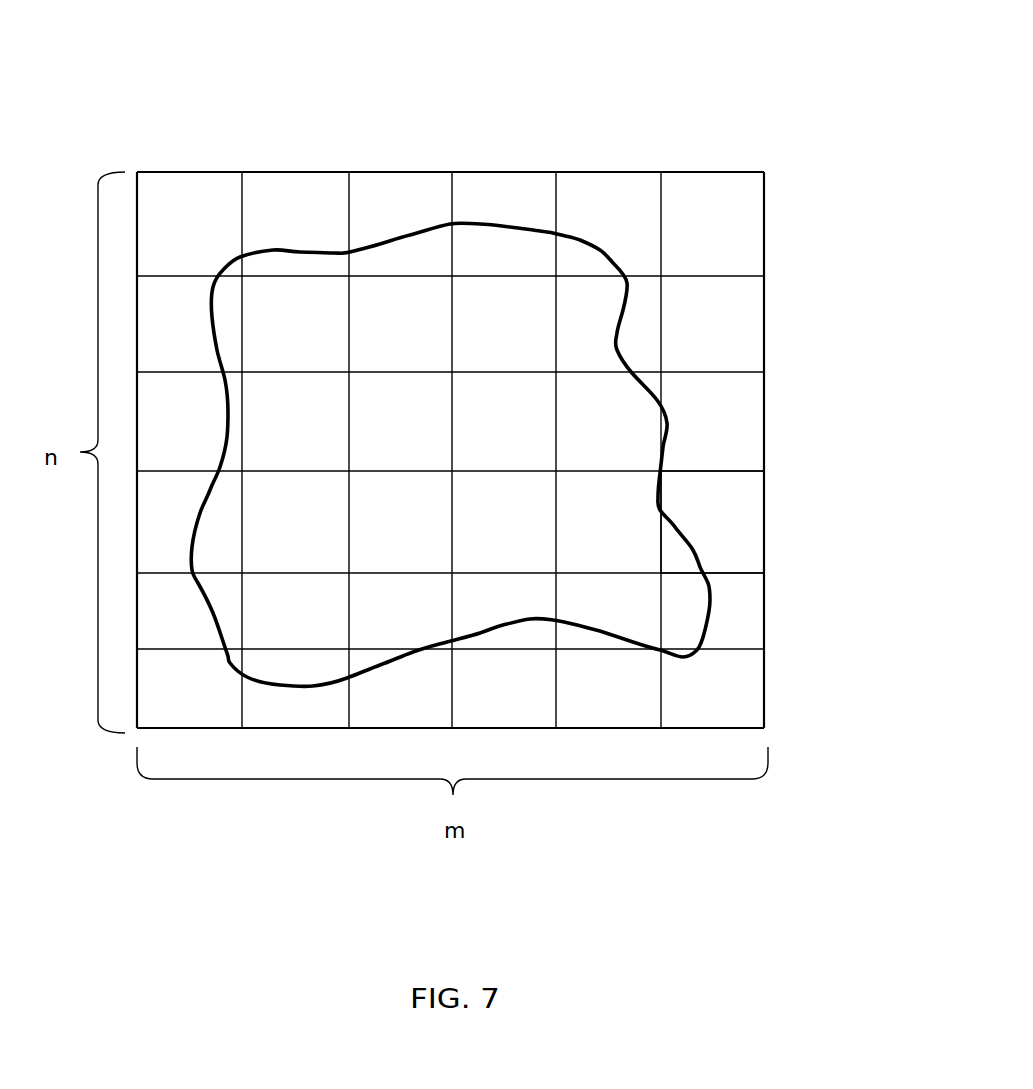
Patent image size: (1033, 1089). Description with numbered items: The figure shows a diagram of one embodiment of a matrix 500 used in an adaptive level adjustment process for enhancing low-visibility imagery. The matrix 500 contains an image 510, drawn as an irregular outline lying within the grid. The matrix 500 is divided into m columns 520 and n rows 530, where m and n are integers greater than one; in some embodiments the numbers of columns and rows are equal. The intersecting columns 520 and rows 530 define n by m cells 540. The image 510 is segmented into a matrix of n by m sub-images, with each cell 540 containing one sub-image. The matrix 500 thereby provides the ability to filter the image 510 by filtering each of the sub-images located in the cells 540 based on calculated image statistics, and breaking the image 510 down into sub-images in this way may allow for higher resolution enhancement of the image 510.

The matrix 500 is at (497, 366).
The image 510 is at (497, 220).
The columns 520 is at (293, 170).
The rows 530 is at (763, 328).
The cells 540 is at (728, 505).